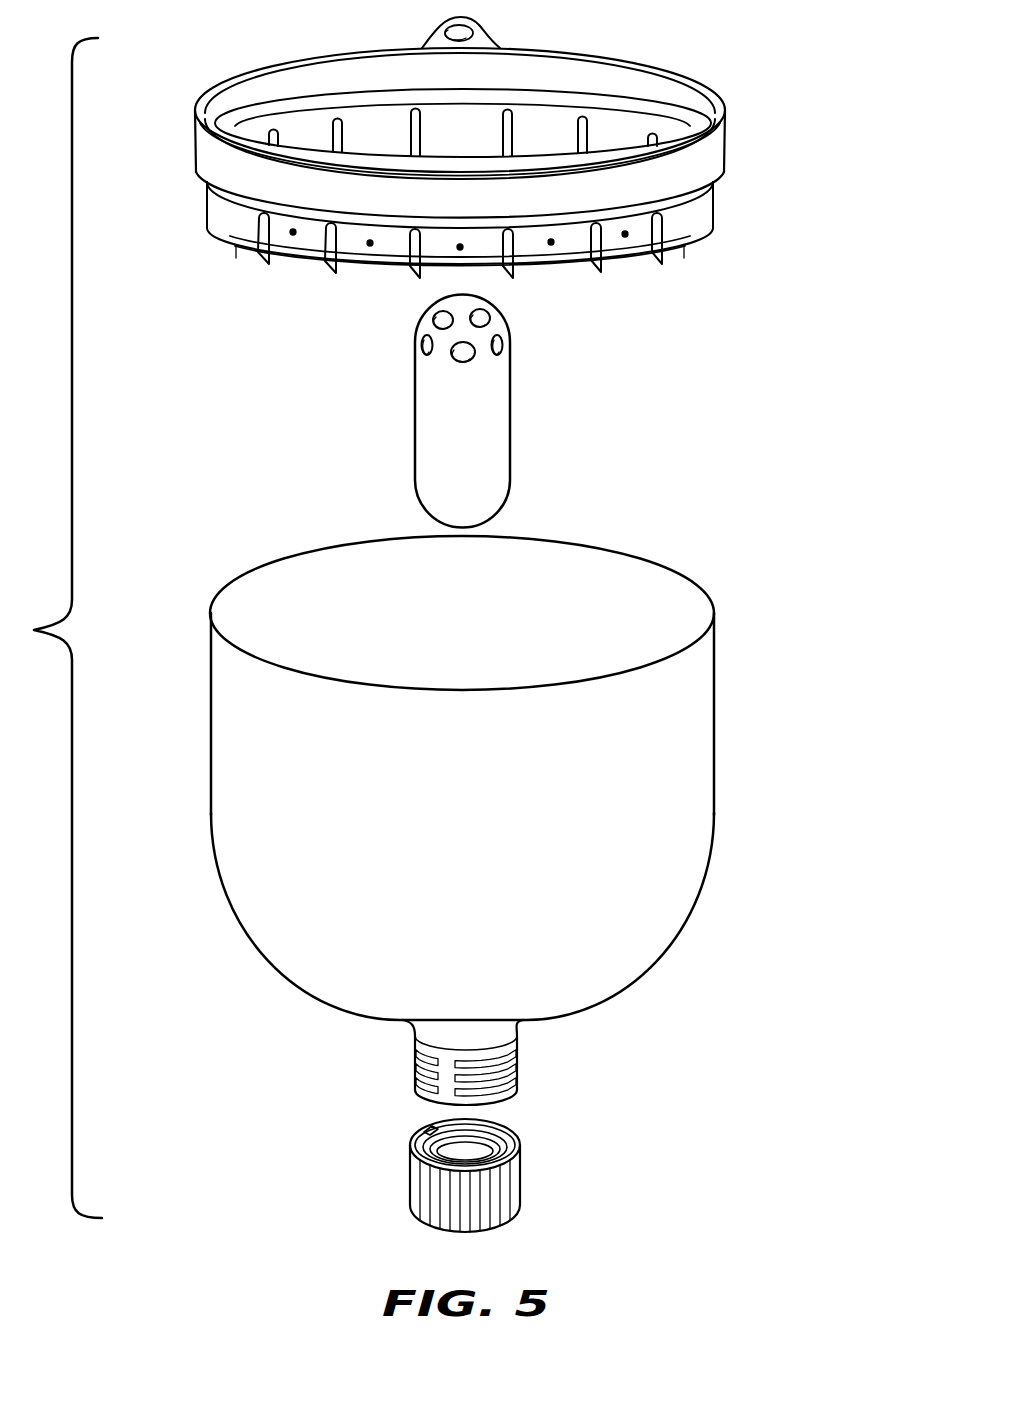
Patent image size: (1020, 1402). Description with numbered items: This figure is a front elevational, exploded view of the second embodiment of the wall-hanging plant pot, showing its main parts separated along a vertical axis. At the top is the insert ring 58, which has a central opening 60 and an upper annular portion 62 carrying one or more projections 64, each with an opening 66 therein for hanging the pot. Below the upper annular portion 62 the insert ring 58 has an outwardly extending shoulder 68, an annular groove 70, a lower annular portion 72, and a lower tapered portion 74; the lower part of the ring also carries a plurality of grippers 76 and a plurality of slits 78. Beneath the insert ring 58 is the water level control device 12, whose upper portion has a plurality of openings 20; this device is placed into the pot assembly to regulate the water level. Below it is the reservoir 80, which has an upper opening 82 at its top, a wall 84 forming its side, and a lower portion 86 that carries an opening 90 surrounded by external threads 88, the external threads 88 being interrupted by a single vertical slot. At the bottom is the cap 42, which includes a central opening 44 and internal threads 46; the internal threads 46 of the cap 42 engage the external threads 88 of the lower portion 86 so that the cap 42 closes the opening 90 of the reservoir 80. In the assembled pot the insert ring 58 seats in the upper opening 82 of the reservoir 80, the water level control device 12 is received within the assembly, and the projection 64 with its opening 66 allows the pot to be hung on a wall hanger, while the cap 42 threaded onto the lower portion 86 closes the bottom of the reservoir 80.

The water level control device 12 is at (368, 395).
The openings 20 is at (488, 323).
The cap 42 is at (555, 1171).
The central opening 44 is at (421, 1131).
The internal threads 46 is at (416, 1146).
The insert ring 58 is at (240, 44).
The central opening 60 is at (640, 76).
The upper annular portion 62 is at (732, 133).
The projection 64 is at (490, 28).
The opening 66 is at (446, 31).
The outwardly extending shoulder 68 is at (718, 172).
The annular groove 70 is at (238, 198).
The lower annular portion 72 is at (694, 220).
The lower tapered portion 74 is at (673, 234).
The grippers 76 is at (556, 244).
The slits 78 is at (332, 270).
The reservoir 80 is at (788, 709).
The upper opening 82 is at (628, 562).
The wall 84 is at (716, 768).
The lower portion 86 is at (568, 1003).
The external threads 88 is at (412, 1073).
The opening 90 is at (492, 1106).